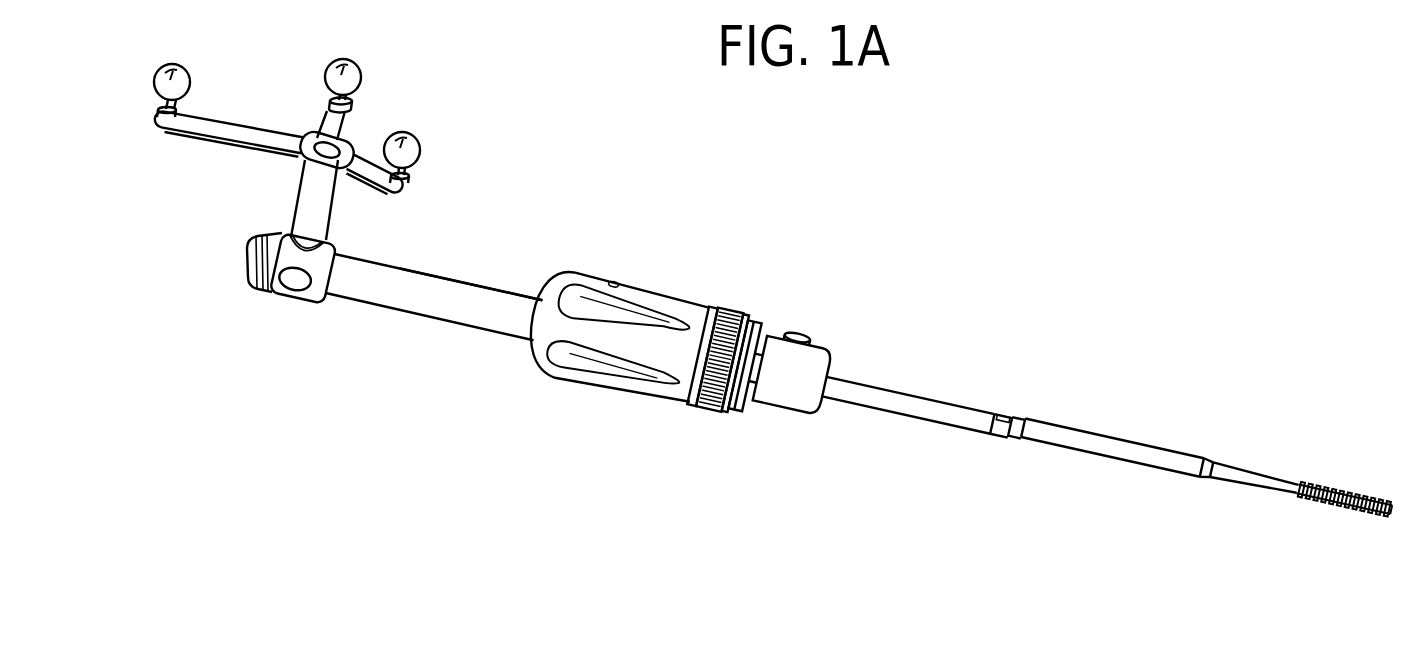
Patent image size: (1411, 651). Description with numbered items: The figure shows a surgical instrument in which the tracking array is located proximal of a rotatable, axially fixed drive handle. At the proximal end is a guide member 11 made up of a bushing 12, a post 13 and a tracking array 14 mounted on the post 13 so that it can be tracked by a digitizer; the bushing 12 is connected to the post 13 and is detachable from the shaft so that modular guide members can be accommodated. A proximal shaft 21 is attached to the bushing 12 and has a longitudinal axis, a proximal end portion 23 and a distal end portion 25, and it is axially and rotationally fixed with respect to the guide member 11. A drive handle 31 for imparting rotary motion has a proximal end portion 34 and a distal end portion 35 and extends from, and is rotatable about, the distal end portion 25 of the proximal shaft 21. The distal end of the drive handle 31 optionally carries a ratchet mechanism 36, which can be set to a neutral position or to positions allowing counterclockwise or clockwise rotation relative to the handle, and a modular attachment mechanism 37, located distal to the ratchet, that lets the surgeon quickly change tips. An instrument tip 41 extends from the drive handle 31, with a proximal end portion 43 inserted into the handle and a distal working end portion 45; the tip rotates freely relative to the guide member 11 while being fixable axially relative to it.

The guide member 11 is at (422, 148).
The bushing 12 is at (290, 290).
The post 13 is at (293, 196).
The tracking array 14 is at (303, 128).
The proximal shaft 21 is at (431, 335).
The proximal end portion 23 is at (248, 272).
The distal end portion 25 is at (455, 290).
The drive handle 31 is at (602, 338).
The proximal end portion 34 is at (538, 363).
The distal end portion 35 is at (643, 400).
The ratchet mechanism 36 is at (734, 297).
The modular attachment mechanism 37 is at (798, 336).
The instrument tip 41 is at (1143, 465).
The proximal end portion 43 is at (880, 380).
The distal working end portion 45 is at (1346, 516).